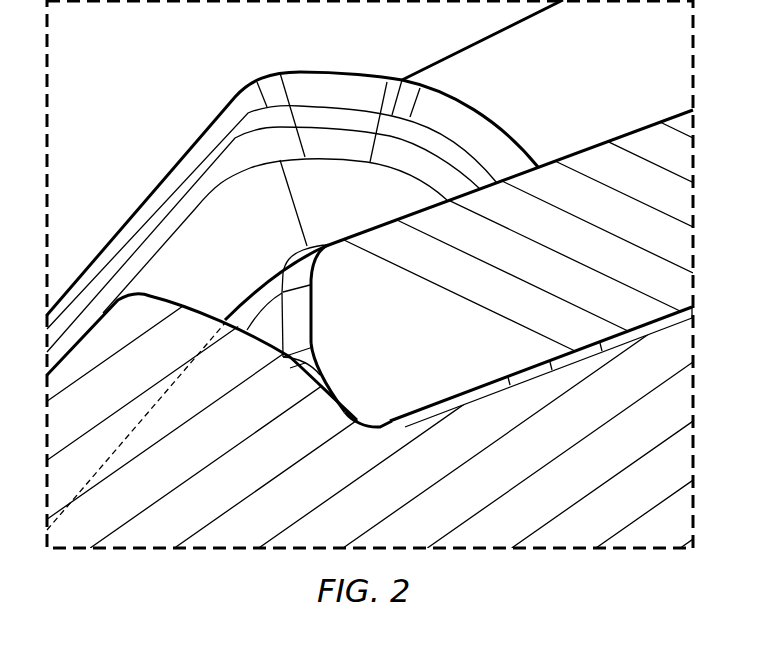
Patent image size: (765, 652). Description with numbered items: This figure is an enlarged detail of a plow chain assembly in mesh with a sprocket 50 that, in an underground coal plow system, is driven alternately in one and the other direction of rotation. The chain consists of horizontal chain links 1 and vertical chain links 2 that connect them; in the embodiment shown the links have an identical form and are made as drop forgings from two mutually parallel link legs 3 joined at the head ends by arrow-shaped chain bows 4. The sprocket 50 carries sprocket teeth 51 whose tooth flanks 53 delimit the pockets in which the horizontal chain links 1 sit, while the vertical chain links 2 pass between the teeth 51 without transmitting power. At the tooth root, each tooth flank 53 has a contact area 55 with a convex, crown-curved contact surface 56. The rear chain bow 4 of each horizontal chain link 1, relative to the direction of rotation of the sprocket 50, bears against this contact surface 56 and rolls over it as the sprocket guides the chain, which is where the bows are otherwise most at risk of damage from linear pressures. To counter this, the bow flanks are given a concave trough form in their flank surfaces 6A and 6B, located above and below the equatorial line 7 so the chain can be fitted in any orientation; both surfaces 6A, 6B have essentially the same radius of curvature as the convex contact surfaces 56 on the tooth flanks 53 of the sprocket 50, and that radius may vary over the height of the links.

The horizontal chain link 1 is at (568, 140).
The vertical chain link 2 is at (233, 200).
The link leg 3 is at (650, 146).
The chain bow 4 is at (333, 265).
The bow flank surface 6A is at (312, 368).
The bow flank surface 6B is at (303, 303).
The equatorial line 7 is at (304, 363).
The sprocket 50 is at (207, 487).
The sprocket tooth 51 is at (117, 331).
The tooth flank 53 is at (205, 317).
The contact area 55 is at (365, 455).
The contact surface 56 is at (322, 392).